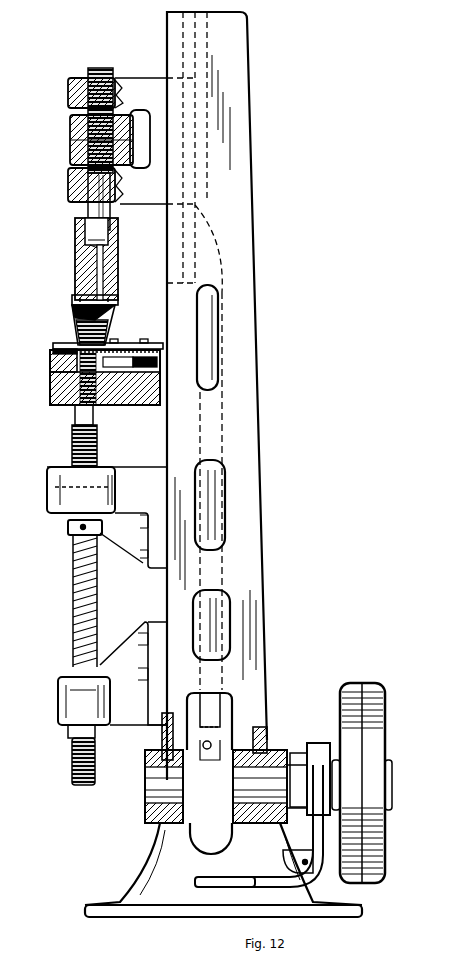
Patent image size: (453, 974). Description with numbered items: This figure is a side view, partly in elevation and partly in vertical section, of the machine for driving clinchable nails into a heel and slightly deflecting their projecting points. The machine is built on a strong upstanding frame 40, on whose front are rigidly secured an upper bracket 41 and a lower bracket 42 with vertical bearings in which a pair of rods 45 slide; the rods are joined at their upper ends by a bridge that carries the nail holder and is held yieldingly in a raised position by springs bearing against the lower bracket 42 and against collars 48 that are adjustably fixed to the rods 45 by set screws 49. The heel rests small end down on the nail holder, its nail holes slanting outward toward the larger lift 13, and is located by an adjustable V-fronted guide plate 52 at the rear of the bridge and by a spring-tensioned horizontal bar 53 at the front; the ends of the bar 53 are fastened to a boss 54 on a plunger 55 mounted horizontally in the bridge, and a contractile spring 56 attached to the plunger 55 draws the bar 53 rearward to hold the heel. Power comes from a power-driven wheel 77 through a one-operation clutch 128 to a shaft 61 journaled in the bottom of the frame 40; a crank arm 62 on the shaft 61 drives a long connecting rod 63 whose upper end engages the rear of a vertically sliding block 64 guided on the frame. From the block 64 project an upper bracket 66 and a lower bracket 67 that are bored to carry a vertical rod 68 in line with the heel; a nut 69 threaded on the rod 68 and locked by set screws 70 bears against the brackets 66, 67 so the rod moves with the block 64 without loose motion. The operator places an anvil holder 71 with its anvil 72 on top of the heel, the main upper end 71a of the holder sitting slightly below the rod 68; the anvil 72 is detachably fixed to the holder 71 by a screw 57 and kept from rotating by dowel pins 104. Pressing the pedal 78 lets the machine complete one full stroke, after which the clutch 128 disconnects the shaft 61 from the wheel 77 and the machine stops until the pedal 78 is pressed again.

The larger lift 13 is at (110, 312).
The upstanding frame 40 is at (243, 423).
The upper bracket 41 is at (137, 468).
The lower bracket 42 is at (112, 660).
The rod 45 is at (72, 440).
The collar 48 is at (70, 530).
The set screw 49 is at (78, 527).
The guide plate 52 is at (135, 345).
The bar 53 is at (65, 345).
The boss 54 is at (50, 357).
The plunger 55 is at (55, 372).
The contractile spring 56 is at (105, 350).
The screw 57 is at (115, 262).
The power-driven shaft 61 is at (147, 782).
The crank arm 62 is at (230, 732).
The connecting rod 63 is at (220, 527).
The sliding block 64 is at (190, 88).
The upper bracket 66 is at (68, 92).
The lower bracket 67 is at (68, 185).
The rod 68 is at (98, 68).
The nut 69 is at (75, 157).
The set screw 70 is at (72, 137).
The anvil holder 71 is at (75, 268).
The main upper end 71a is at (118, 240).
The anvil 72 is at (72, 305).
The power-driven wheel 77 is at (368, 690).
The pedal 78 is at (212, 883).
The dowel pin 104 is at (110, 300).
The one-operation clutch 128 is at (317, 745).